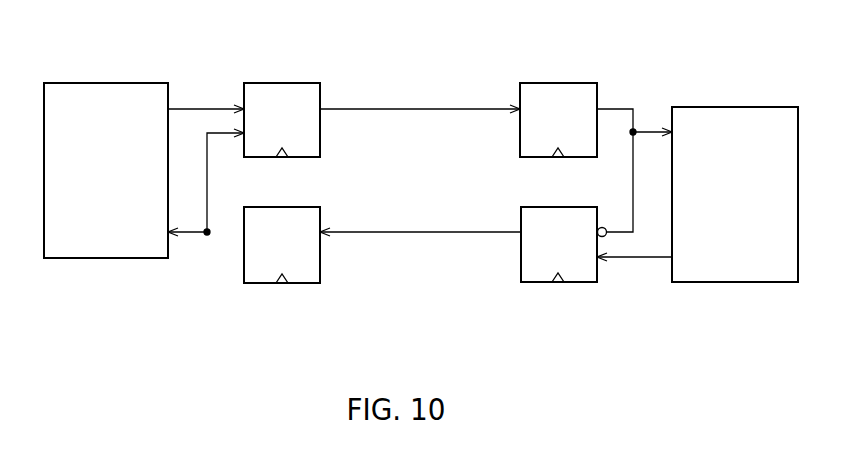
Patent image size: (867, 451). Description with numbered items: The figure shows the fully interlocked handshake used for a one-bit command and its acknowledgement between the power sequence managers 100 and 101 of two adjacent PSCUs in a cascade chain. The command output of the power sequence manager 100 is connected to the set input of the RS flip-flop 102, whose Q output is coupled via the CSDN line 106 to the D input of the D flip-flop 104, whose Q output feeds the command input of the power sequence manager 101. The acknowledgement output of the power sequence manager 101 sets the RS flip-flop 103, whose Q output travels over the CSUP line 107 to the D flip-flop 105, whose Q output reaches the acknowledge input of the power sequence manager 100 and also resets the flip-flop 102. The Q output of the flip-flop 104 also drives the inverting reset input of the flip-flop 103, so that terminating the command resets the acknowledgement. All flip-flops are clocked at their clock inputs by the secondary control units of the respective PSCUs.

The power sequence manager 100 is at (103, 95).
The power sequence manager 101 is at (740, 110).
The RS flip-flop 102 is at (280, 93).
The RS flip-flop 103 is at (572, 283).
The D flip-flop 104 is at (558, 92).
The D flip-flop 105 is at (295, 283).
The CSDN line 106 is at (412, 108).
The CSUP line 107 is at (422, 234).